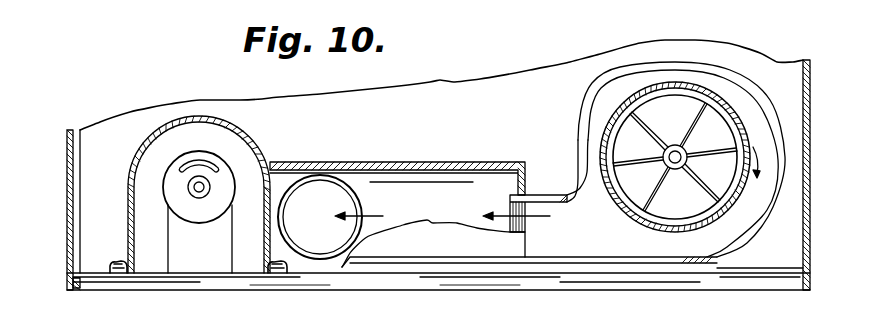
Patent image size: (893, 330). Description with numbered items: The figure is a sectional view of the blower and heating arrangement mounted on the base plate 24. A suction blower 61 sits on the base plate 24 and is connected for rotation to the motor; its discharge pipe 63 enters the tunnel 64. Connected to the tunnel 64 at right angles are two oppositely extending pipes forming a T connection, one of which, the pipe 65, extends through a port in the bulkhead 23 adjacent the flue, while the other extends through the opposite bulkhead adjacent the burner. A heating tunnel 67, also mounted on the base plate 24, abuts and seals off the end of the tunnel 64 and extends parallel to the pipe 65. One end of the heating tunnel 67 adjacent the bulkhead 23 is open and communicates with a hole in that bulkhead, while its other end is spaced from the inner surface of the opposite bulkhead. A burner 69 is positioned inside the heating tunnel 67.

The bulkhead 23 is at (239, 103).
The base plate 24 is at (221, 282).
The blower 61 is at (633, 50).
The discharge pipe 63 is at (547, 193).
The tunnel 64 is at (443, 182).
The pipe 65 is at (317, 197).
The heating tunnel 67 is at (228, 140).
The burner 69 is at (188, 187).